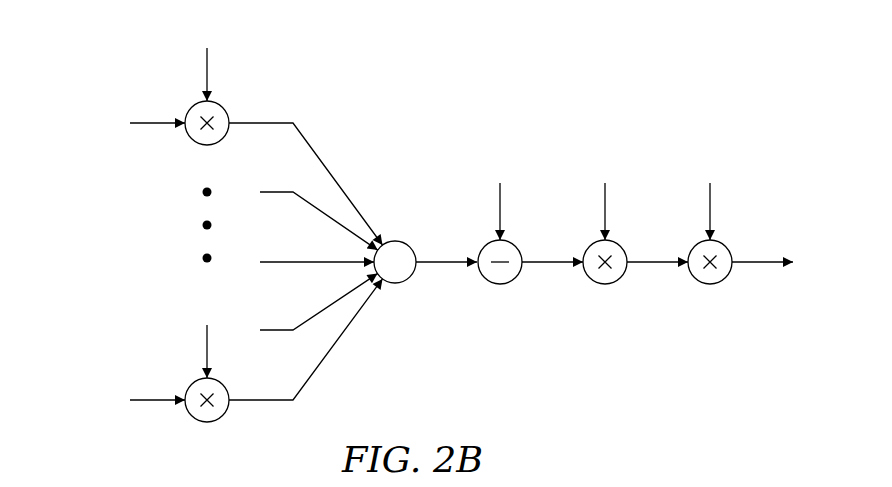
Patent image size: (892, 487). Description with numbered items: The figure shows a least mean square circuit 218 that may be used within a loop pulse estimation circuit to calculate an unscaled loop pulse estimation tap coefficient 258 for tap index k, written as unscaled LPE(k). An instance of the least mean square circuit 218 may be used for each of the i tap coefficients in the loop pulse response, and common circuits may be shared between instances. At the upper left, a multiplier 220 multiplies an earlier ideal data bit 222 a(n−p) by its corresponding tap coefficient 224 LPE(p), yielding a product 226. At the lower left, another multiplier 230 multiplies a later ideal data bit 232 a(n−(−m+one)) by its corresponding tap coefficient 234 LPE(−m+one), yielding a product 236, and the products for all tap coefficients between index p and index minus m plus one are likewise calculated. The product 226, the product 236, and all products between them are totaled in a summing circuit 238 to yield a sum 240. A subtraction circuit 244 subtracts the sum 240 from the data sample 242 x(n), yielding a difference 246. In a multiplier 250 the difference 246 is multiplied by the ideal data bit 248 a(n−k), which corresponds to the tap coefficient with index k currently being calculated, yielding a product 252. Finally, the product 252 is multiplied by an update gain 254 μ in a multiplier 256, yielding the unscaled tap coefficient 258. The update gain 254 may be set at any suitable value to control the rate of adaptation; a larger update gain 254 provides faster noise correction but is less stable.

The least mean square circuit 218 is at (684, 61).
The multiplier 220 is at (190, 138).
The earlier ideal data bit 222 is at (148, 120).
The tap coefficient 224 is at (207, 63).
The product 226 is at (284, 120).
The multiplier 230 is at (190, 415).
The later ideal data bit 232 is at (148, 397).
The tap coefficient 234 is at (207, 341).
The product 236 is at (284, 397).
The summing circuit 238 is at (400, 283).
The sum 240 is at (440, 264).
The data sample 242 is at (500, 203).
The subtraction circuit 244 is at (500, 284).
The difference 246 is at (547, 264).
The ideal data bit 248 is at (605, 203).
The multiplier 250 is at (605, 284).
The product 252 is at (652, 264).
The update gain 254 is at (710, 203).
The multiplier 256 is at (710, 284).
The unscaled tap coefficient 258 is at (757, 264).